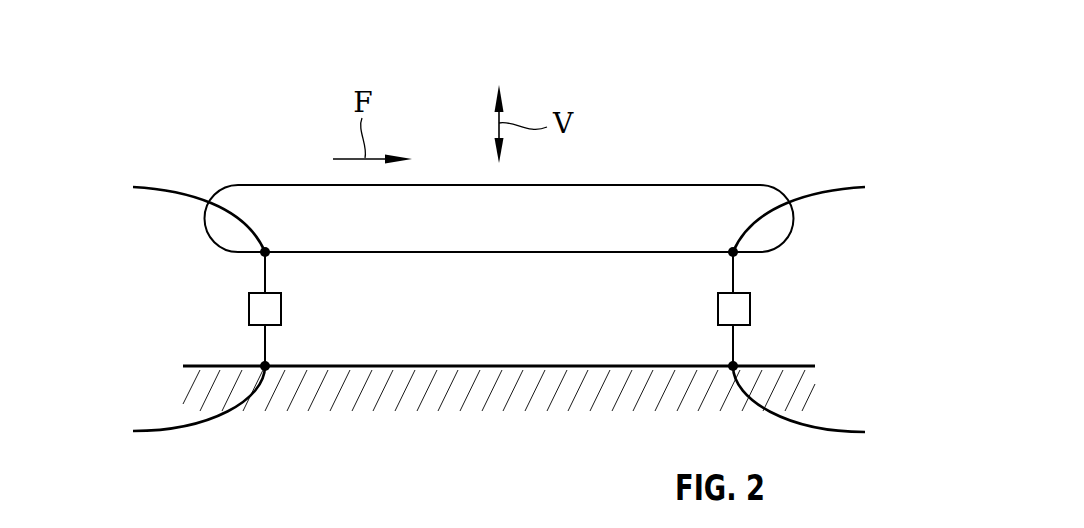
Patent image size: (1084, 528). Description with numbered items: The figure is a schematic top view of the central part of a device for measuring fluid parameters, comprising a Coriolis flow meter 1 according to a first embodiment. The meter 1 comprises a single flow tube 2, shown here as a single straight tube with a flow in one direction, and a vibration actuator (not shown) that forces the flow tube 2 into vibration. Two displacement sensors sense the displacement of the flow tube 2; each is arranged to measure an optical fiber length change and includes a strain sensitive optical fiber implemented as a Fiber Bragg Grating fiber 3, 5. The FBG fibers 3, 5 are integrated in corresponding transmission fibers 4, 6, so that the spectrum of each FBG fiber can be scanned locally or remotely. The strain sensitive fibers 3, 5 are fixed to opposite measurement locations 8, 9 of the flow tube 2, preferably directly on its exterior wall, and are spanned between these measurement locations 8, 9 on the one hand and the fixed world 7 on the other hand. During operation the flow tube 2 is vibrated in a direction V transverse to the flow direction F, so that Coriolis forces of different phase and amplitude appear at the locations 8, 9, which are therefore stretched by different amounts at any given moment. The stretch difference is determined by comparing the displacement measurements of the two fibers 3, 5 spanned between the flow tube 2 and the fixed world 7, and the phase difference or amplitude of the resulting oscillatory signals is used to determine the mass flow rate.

The Coriolis flow meter 1 is at (748, 97).
The flow tube 2 is at (663, 185).
The Fiber Bragg Grating fiber 3 is at (249, 307).
The transmission fiber 4 is at (184, 187).
The Fiber Bragg Grating fiber 5 is at (750, 307).
The transmission fiber 6 is at (812, 187).
The fixed world 7 is at (500, 366).
The measurement location 8 is at (244, 196).
The measurement location 9 is at (754, 196).